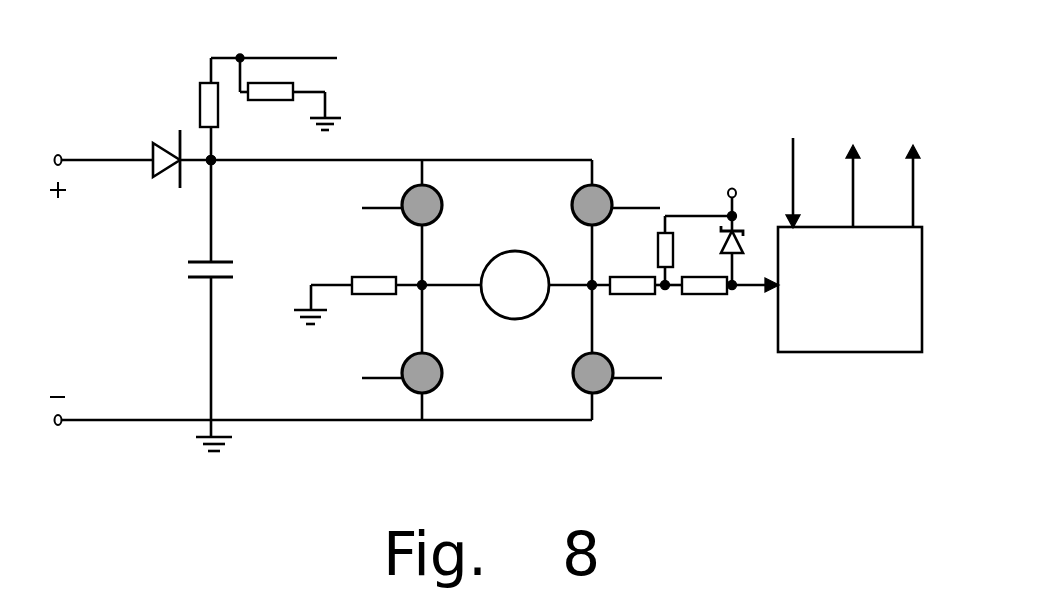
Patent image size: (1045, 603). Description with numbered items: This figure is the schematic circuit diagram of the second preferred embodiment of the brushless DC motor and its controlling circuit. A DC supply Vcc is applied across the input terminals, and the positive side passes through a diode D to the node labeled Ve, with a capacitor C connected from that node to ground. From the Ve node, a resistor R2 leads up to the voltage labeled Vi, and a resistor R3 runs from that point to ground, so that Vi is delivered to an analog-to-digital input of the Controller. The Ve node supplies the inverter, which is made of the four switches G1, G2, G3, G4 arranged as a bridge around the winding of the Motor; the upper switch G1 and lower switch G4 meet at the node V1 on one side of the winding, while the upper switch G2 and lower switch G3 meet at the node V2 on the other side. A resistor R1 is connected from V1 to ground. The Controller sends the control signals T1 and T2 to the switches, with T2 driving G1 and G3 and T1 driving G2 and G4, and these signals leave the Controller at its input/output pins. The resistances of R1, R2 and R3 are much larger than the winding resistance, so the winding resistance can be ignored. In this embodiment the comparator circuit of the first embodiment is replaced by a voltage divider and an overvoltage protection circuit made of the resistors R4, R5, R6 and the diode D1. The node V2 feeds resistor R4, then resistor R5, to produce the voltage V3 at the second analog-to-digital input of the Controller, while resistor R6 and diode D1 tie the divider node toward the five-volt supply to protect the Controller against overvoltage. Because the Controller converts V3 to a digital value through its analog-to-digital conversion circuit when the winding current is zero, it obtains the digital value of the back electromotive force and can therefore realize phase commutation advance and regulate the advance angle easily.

The diode D is at (150, 159).
The resistor R1 is at (387, 292).
The resistor R2 is at (258, 90).
The resistor R3 is at (290, 94).
The resistor R4 is at (646, 295).
The resistor R5 is at (730, 294).
The resistor R6 is at (683, 250).
The capacitor C is at (196, 276).
The diode D1 is at (719, 231).
The switch G1 is at (436, 205).
The switch G2 is at (580, 205).
The switch G3 is at (582, 373).
The switch G4 is at (435, 373).
The control signal T1 is at (611, 261).
The control signal T2 is at (641, 261).
The voltage V1 is at (434, 277).
The voltage V2 is at (579, 277).
The voltage V3 is at (762, 306).
The voltage Ve is at (226, 171).
The voltage Vi is at (570, 137).
The supply voltage Vcc is at (63, 276).
The brushless DC motor Motor is at (515, 285).
The controller Controller is at (850, 289).